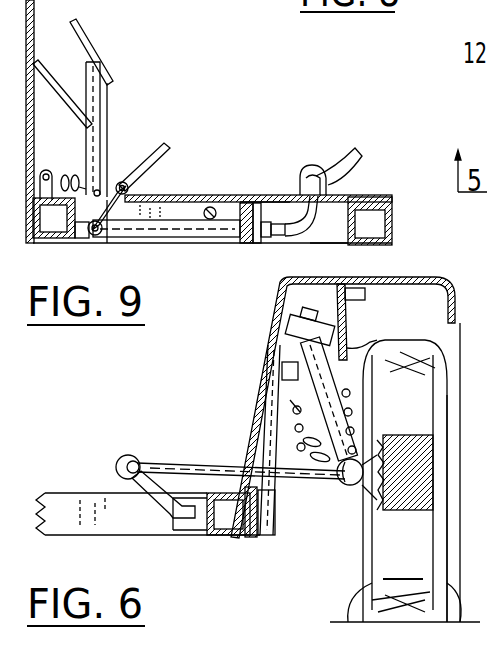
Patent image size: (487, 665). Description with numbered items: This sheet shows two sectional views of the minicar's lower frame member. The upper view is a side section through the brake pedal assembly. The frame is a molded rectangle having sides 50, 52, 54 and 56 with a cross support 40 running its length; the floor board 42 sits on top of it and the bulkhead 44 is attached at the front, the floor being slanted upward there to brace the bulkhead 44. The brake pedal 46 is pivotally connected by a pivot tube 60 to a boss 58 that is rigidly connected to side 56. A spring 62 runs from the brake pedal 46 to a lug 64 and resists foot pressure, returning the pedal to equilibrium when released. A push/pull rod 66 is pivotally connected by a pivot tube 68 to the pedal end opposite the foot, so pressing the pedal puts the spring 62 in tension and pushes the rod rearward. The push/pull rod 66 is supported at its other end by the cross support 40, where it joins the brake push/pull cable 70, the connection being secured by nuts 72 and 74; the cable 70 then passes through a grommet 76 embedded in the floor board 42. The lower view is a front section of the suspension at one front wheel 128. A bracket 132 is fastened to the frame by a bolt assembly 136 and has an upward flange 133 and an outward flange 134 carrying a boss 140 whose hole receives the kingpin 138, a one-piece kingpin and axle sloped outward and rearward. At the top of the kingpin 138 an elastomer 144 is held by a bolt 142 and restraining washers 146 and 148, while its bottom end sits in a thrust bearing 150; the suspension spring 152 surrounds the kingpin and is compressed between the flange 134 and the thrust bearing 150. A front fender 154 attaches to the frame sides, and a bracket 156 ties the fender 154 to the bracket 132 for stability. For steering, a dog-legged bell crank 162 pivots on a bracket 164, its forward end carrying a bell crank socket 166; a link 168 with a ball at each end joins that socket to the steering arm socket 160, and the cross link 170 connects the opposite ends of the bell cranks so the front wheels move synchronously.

In FIG. 9, the cross support 40 is at (256, 235).
In FIG. 6, the cross support 40 is at (130, 523).
In FIG. 9, the floor board 42 is at (272, 172).
In FIG. 9, the bulkhead 44 is at (35, 36).
In FIG. 6, the bulkhead 44 is at (449, 513).
In FIG. 9, the brake pedal 46 is at (90, 52).
In FIG. 6, the side 50 is at (230, 540).
In FIG. 9, the side 52 is at (390, 243).
In FIG. 9, the side 54 is at (323, 237).
In FIG. 9, the side 56 is at (55, 238).
In FIG. 9, the boss 58 is at (83, 238).
In FIG. 9, the pivot tube 60 is at (137, 183).
In FIG. 9, the spring 62 is at (65, 173).
In FIG. 9, the lug 64 is at (48, 182).
In FIG. 9, the push/pull rod 66 is at (146, 237).
In FIG. 9, the pivot tube 68 is at (98, 235).
In FIG. 9, the brake push/pull cable 70 is at (340, 147).
In FIG. 9, the nut 72 is at (240, 233).
In FIG. 9, the nut 74 is at (272, 236).
In FIG. 9, the grommet 76 is at (302, 165).
In FIG. 6, the front wheel 128 is at (405, 481).
In FIG. 6, the bracket 132 is at (265, 525).
In FIG. 6, the flange 133 is at (275, 437).
In FIG. 6, the flange 134 is at (275, 378).
In FIG. 6, the bolt assembly 136 is at (257, 537).
In FIG. 6, the kingpin 138 is at (270, 355).
In FIG. 6, the boss 140 is at (293, 405).
In FIG. 6, the bolt 142 is at (290, 314).
In FIG. 6, the elastomer 144 is at (285, 333).
In FIG. 6, the restraining washer 146 is at (348, 327).
In FIG. 6, the restraining washer 148 is at (350, 348).
In FIG. 6, the thrust bearing 150 is at (340, 477).
In FIG. 6, the suspension spring 152 is at (300, 425).
In FIG. 6, the front fender 154 is at (427, 277).
In FIG. 6, the bracket 156 is at (350, 293).
In FIG. 6, the steering arm socket 160 is at (370, 478).
In FIG. 6, the bell crank 162 is at (117, 485).
In FIG. 6, the bracket 164 is at (188, 537).
In FIG. 6, the bell crank socket 166 is at (130, 448).
In FIG. 6, the link 168 is at (183, 463).
In FIG. 9, the cross link 170 is at (224, 176).